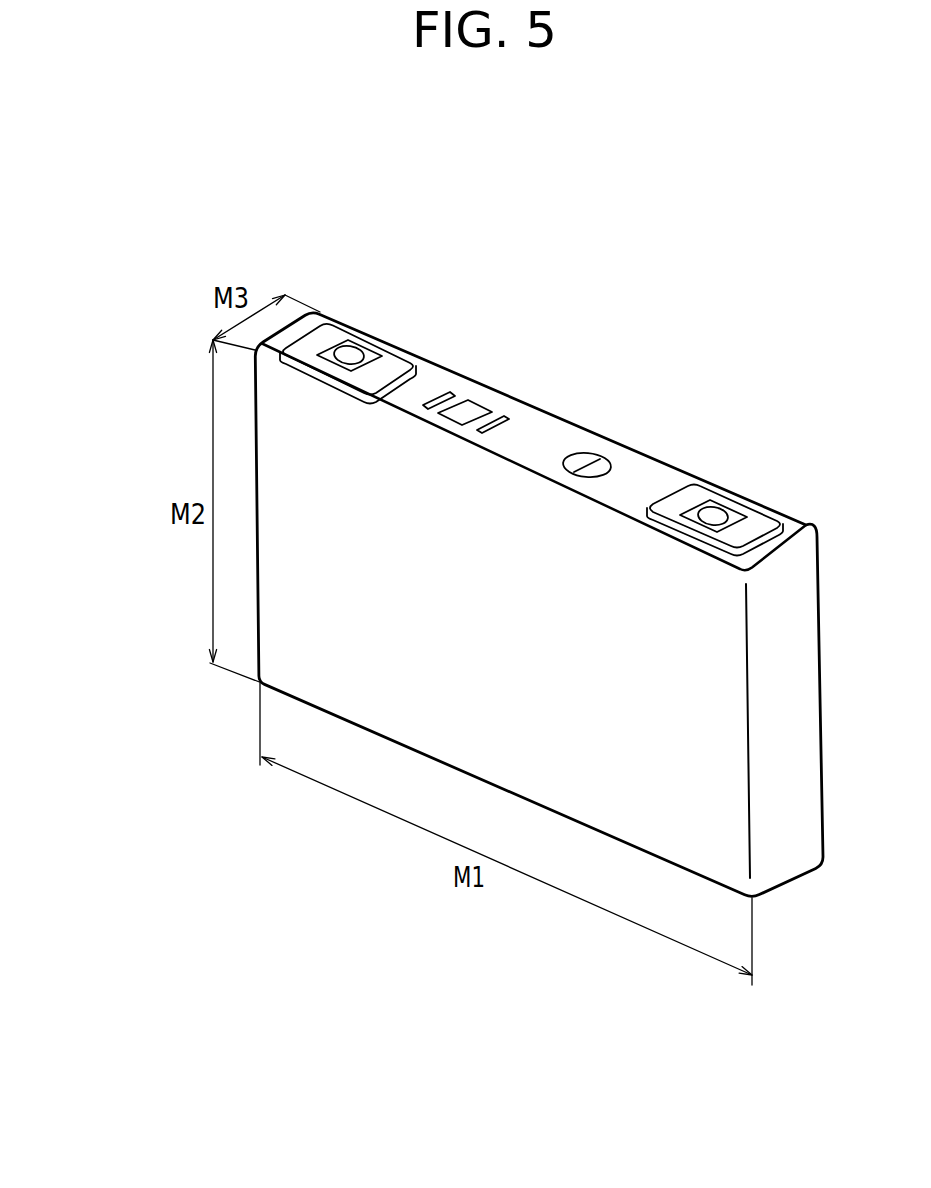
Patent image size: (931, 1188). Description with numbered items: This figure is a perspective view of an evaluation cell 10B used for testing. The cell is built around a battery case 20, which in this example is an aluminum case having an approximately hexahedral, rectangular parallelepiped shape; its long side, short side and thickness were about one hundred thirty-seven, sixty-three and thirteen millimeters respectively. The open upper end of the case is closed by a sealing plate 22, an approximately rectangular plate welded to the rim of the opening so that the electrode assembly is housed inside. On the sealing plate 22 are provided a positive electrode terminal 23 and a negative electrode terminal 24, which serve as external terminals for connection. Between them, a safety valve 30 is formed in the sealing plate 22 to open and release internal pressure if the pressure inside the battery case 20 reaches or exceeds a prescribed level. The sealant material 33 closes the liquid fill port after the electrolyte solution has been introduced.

The battery cell 10B is at (165, 282).
The battery case 20 is at (405, 712).
The sealing plate 22 is at (647, 474).
The positive electrode terminal 23 is at (315, 336).
The negative electrode terminal 24 is at (760, 523).
The safety valve 30 is at (460, 410).
The sealant material 33 is at (577, 458).